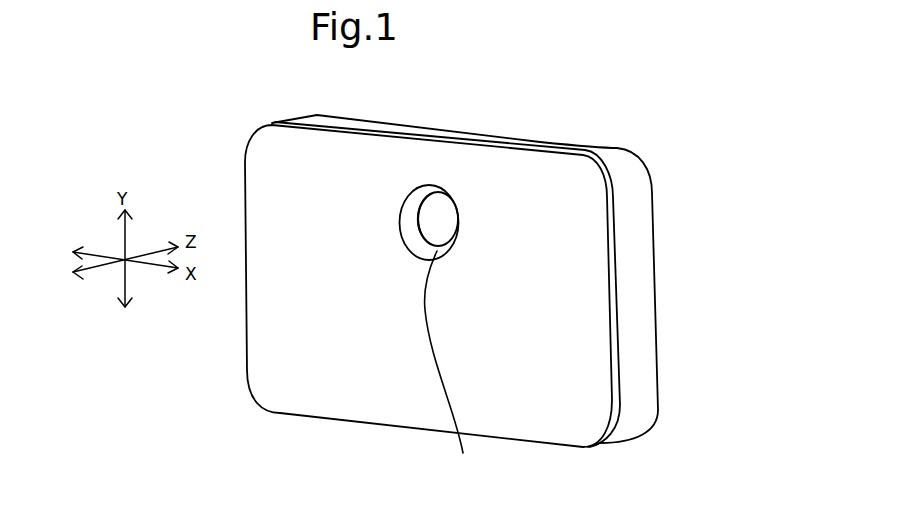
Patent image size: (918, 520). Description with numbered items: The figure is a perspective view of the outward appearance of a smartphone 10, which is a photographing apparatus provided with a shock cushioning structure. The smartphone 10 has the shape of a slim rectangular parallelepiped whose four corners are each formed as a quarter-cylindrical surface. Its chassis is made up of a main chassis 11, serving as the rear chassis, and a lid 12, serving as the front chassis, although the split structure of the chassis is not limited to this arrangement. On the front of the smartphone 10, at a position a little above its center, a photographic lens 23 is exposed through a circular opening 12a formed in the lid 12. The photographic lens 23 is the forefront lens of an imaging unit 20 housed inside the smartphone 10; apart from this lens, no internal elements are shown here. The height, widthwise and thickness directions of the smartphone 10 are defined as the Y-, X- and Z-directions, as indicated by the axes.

The smartphone 10 is at (516, 276).
The main chassis 11 is at (640, 239).
The lid 12 is at (492, 276).
The circular opening 12a is at (453, 369).
The imaging unit 20 is at (456, 162).
The photographic lens 23 is at (440, 213).